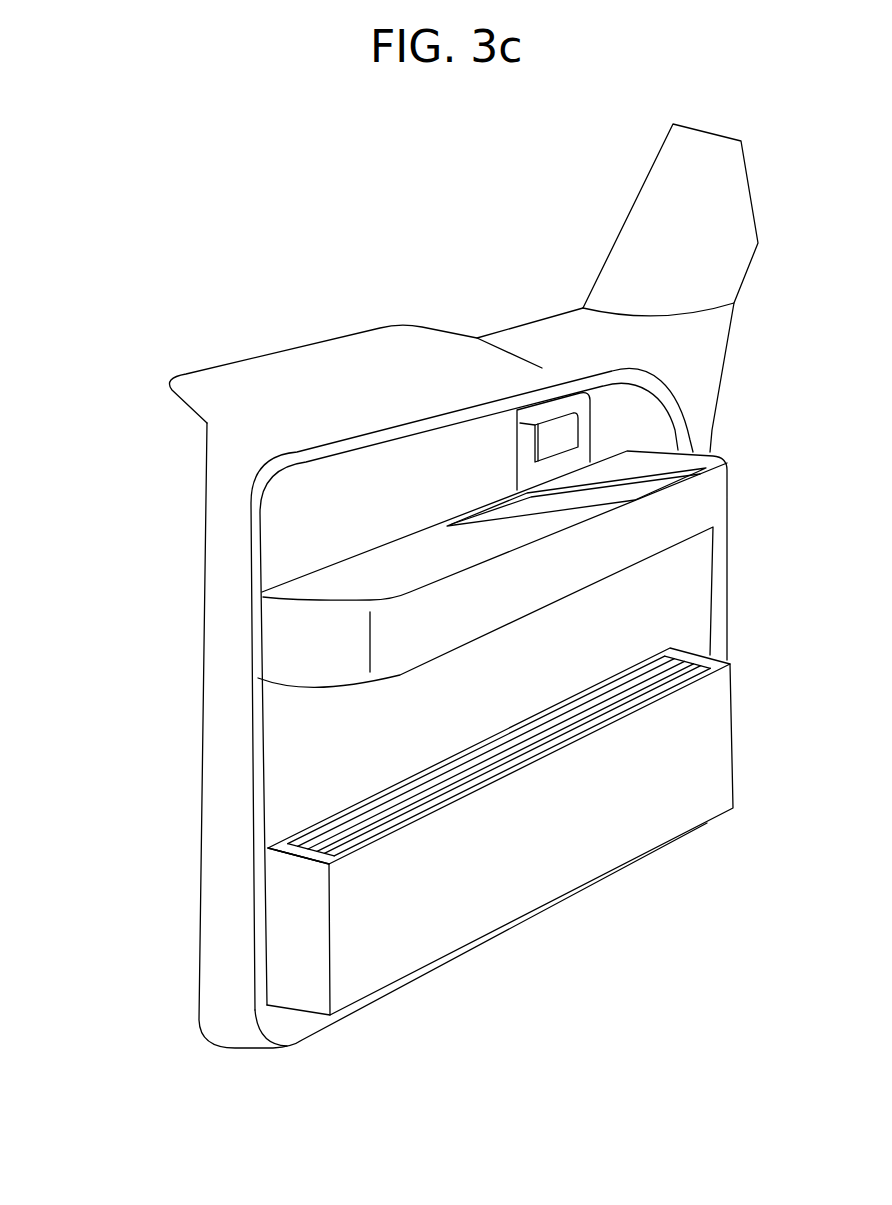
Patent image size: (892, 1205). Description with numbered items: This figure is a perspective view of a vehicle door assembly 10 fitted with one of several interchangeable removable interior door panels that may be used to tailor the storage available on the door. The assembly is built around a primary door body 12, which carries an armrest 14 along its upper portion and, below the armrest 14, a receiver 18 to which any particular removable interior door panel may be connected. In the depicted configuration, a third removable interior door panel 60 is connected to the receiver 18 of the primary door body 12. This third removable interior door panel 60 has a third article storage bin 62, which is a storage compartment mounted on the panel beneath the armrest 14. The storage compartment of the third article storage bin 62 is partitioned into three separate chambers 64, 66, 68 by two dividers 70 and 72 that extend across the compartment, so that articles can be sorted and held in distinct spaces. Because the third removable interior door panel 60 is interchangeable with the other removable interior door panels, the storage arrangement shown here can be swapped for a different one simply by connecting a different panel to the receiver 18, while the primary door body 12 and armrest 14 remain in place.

The vehicle door assembly 10 is at (180, 300).
The primary door body 12 is at (220, 558).
The armrest 14 is at (360, 578).
The receiver 18 is at (303, 822).
The third removable interior door panel 60 is at (267, 937).
The third article storage bin 62 is at (680, 655).
The chamber 64 is at (292, 846).
The chamber 66 is at (510, 748).
The chamber 68 is at (638, 700).
The divider 70 is at (568, 712).
The divider 72 is at (412, 808).